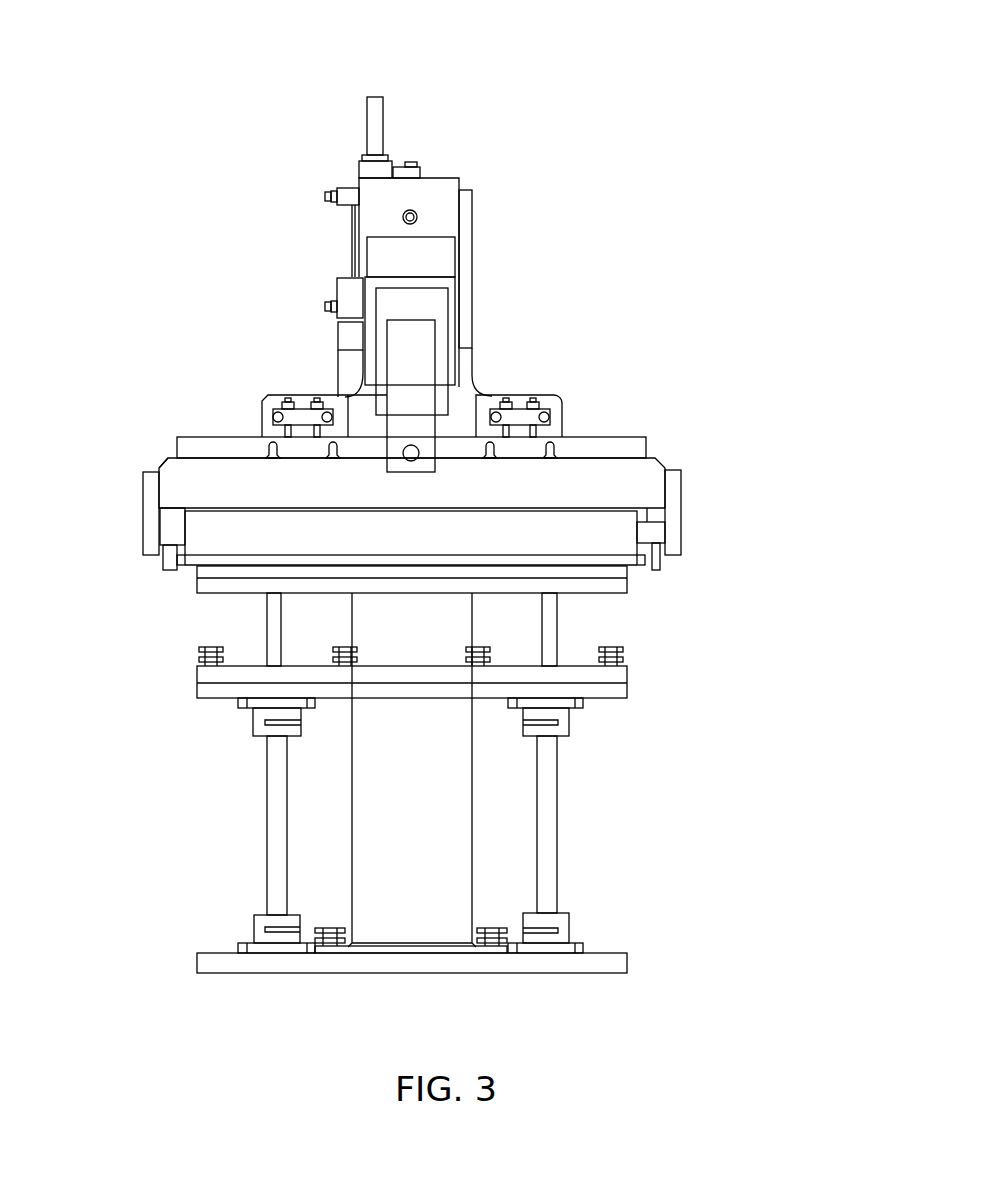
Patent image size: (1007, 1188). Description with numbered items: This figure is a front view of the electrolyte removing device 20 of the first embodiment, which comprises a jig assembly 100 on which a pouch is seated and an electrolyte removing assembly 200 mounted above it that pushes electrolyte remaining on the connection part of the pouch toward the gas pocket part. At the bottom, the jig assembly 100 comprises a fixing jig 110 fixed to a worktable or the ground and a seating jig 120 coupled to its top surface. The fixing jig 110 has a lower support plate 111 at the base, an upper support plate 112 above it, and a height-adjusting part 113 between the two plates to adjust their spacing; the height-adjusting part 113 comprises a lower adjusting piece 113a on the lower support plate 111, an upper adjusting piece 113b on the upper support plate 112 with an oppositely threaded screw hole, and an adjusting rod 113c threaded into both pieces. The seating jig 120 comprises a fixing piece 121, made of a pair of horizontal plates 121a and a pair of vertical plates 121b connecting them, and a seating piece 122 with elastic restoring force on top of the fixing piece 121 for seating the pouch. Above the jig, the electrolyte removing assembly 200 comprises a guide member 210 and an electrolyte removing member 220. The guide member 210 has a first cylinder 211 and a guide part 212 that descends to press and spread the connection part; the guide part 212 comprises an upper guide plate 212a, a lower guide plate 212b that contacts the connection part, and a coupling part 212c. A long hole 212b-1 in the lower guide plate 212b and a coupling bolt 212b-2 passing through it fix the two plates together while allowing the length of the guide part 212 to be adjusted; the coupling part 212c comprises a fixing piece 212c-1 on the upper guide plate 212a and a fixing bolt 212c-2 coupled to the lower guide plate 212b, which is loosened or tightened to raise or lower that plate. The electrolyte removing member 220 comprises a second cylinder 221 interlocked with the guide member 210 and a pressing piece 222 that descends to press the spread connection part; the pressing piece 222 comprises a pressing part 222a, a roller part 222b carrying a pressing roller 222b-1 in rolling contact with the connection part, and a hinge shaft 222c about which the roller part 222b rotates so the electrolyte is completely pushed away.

The electrolyte removing device 20 is at (115, 147).
The jig assembly 100 is at (807, 625).
The fixing jig 110 is at (747, 735).
The lower support plate 111 is at (617, 960).
The upper support plate 112 is at (613, 692).
The height-adjusting part 113 is at (680, 768).
The lower adjusting piece 113a is at (565, 920).
The upper adjusting piece 113b is at (557, 717).
The adjusting rod 113c is at (547, 837).
The seating jig 120 is at (745, 590).
The fixing piece 121 is at (685, 618).
The horizontal plates 121a is at (613, 590).
The vertical plates 121b is at (553, 623).
The seating piece 122 is at (620, 573).
The electrolyte removing assembly 200 is at (790, 100).
The guide member 210 is at (722, 73).
The first cylinder 211 is at (436, 193).
The guide part 212 is at (157, 290).
The upper guide plate 212a is at (266, 404).
The lower guide plate 212b is at (190, 442).
The long hole 212b-1 is at (270, 448).
The coupling bolt 212b-2 is at (263, 458).
The coupling part 212c is at (282, 218).
The fixing piece 212c-1 is at (303, 413).
The fixing bolt 212c-2 is at (287, 403).
The electrolyte removing member 220 is at (722, 165).
The second cylinder 221 is at (437, 310).
The pressing piece 222 is at (663, 320).
The pressing part 222a is at (410, 383).
The roller part 222b is at (618, 470).
The pressing roller 222b-1 is at (630, 533).
The hinge shaft 222c is at (420, 452).